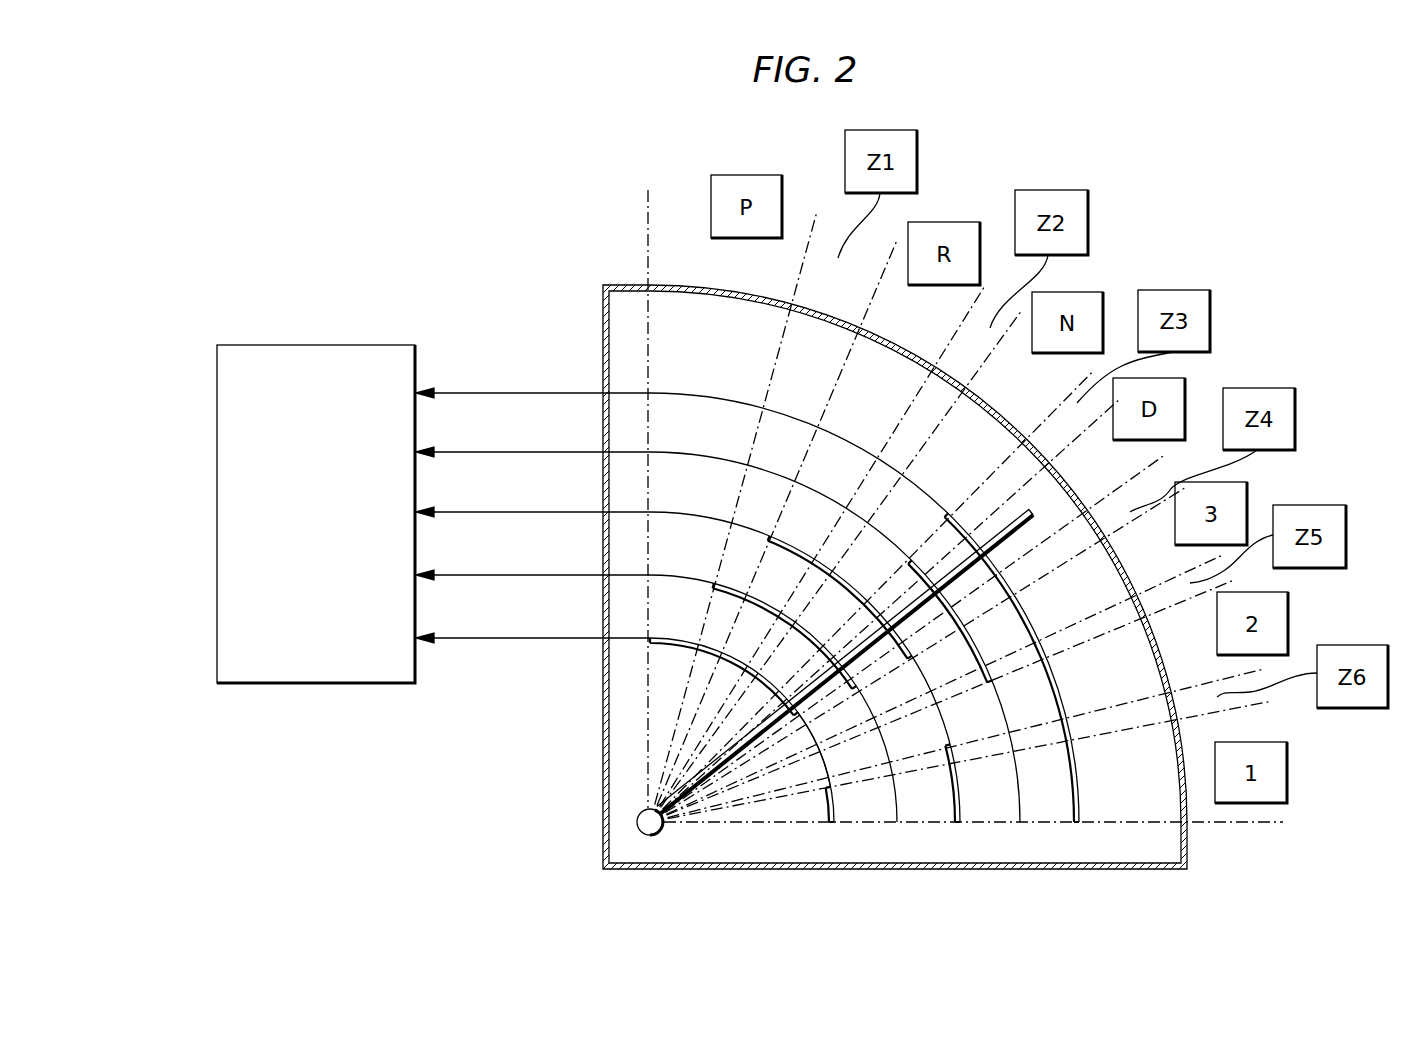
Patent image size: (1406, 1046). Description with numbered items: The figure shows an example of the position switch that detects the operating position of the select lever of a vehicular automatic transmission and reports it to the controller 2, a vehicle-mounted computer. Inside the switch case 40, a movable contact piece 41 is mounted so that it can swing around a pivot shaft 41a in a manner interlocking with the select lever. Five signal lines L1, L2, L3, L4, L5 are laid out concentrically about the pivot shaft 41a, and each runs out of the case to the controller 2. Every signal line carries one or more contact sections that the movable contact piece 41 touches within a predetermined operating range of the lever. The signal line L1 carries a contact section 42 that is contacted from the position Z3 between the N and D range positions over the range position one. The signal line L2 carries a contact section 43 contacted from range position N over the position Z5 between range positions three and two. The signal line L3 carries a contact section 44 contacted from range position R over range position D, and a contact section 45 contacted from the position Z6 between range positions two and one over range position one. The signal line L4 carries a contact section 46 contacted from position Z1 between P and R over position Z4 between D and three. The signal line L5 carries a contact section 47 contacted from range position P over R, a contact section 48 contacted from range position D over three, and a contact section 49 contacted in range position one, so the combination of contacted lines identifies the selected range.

The controller 2 is at (315, 345).
The switch case 40 is at (603, 312).
The movable contact piece 41 is at (1036, 509).
The pivot shaft 41a is at (651, 836).
The contact section 42 is at (1057, 674).
The contact section 43 is at (898, 542).
The contact section 44 is at (857, 588).
The contact section 45 is at (963, 793).
The contact section 46 is at (766, 600).
The contact section 47 is at (672, 636).
The contact section 48 is at (812, 726).
The contact section 49 is at (838, 806).
The signal line L1 is at (515, 391).
The signal line L2 is at (515, 451).
The signal line L3 is at (515, 511).
The signal line L4 is at (515, 574).
The signal line L5 is at (515, 637).